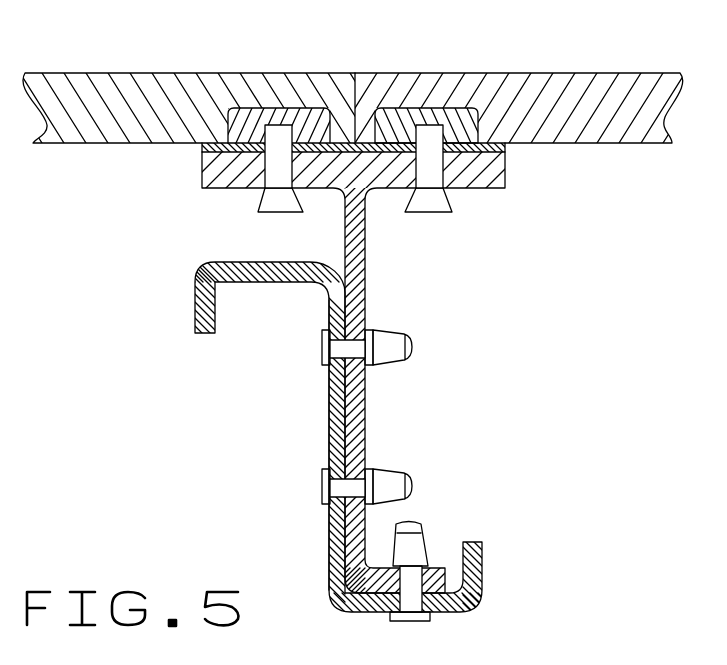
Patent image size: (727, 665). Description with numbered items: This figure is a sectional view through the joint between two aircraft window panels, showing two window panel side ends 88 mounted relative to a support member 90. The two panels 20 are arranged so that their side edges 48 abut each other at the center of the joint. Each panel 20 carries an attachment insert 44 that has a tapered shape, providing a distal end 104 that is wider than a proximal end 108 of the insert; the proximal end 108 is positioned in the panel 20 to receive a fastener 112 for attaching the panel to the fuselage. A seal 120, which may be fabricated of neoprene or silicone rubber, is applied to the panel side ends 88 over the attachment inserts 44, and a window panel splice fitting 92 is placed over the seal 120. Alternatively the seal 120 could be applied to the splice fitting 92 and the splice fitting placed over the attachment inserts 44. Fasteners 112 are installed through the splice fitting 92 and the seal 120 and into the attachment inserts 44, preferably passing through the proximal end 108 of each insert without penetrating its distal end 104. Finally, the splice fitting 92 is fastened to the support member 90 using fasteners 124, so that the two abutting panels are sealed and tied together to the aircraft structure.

The panel 20 is at (85, 147).
The attachment insert 44 is at (228, 115).
The side edge 48 is at (376, 138).
The window panel side end 88 is at (371, 80).
The support member 90 is at (312, 443).
The window panel splice fitting 92 is at (368, 310).
The distal end 104 is at (466, 92).
The proximal end 108 is at (468, 135).
The fastener 112 is at (432, 212).
The seal 120 is at (200, 148).
The fastener 124 is at (415, 349).